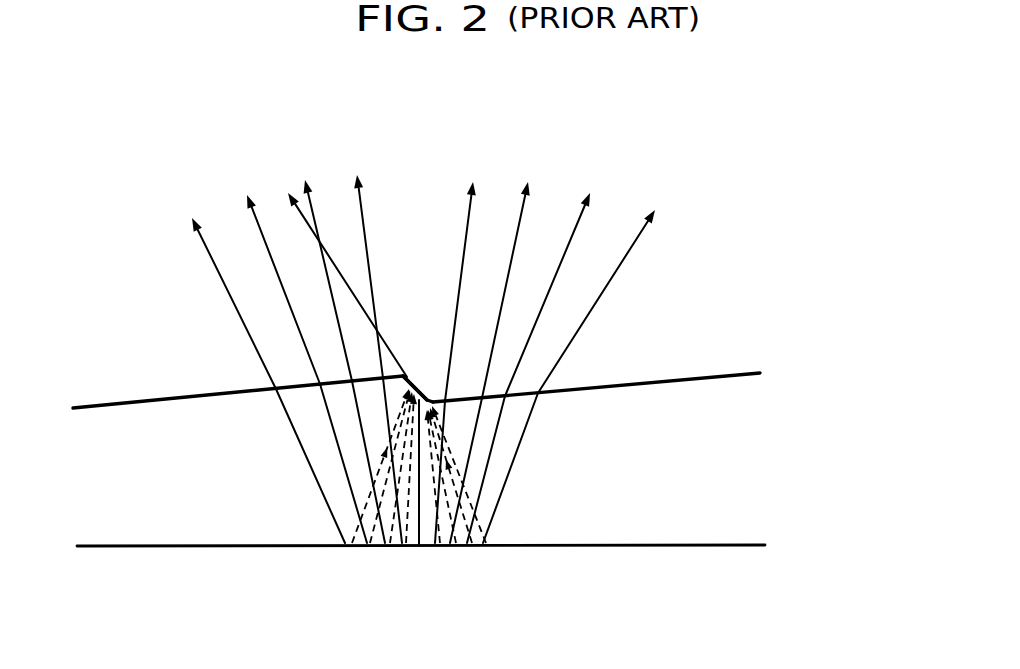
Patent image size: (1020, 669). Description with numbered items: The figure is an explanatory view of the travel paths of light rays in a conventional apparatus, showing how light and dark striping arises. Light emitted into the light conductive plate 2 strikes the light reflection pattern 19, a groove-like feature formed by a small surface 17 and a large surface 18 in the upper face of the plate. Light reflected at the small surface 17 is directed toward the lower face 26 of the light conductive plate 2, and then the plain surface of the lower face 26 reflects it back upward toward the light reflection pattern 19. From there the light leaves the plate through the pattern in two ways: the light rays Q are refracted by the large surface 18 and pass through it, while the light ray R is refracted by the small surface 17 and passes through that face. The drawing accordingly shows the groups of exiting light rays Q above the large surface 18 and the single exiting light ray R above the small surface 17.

The light conductive plate 2 is at (157, 423).
The small surface 17 is at (427, 392).
The large surface 18 is at (703, 375).
The light reflection pattern 19 is at (818, 251).
The lower face 26 is at (157, 548).
The light rays Q is at (250, 192).
The light ray R is at (290, 190).